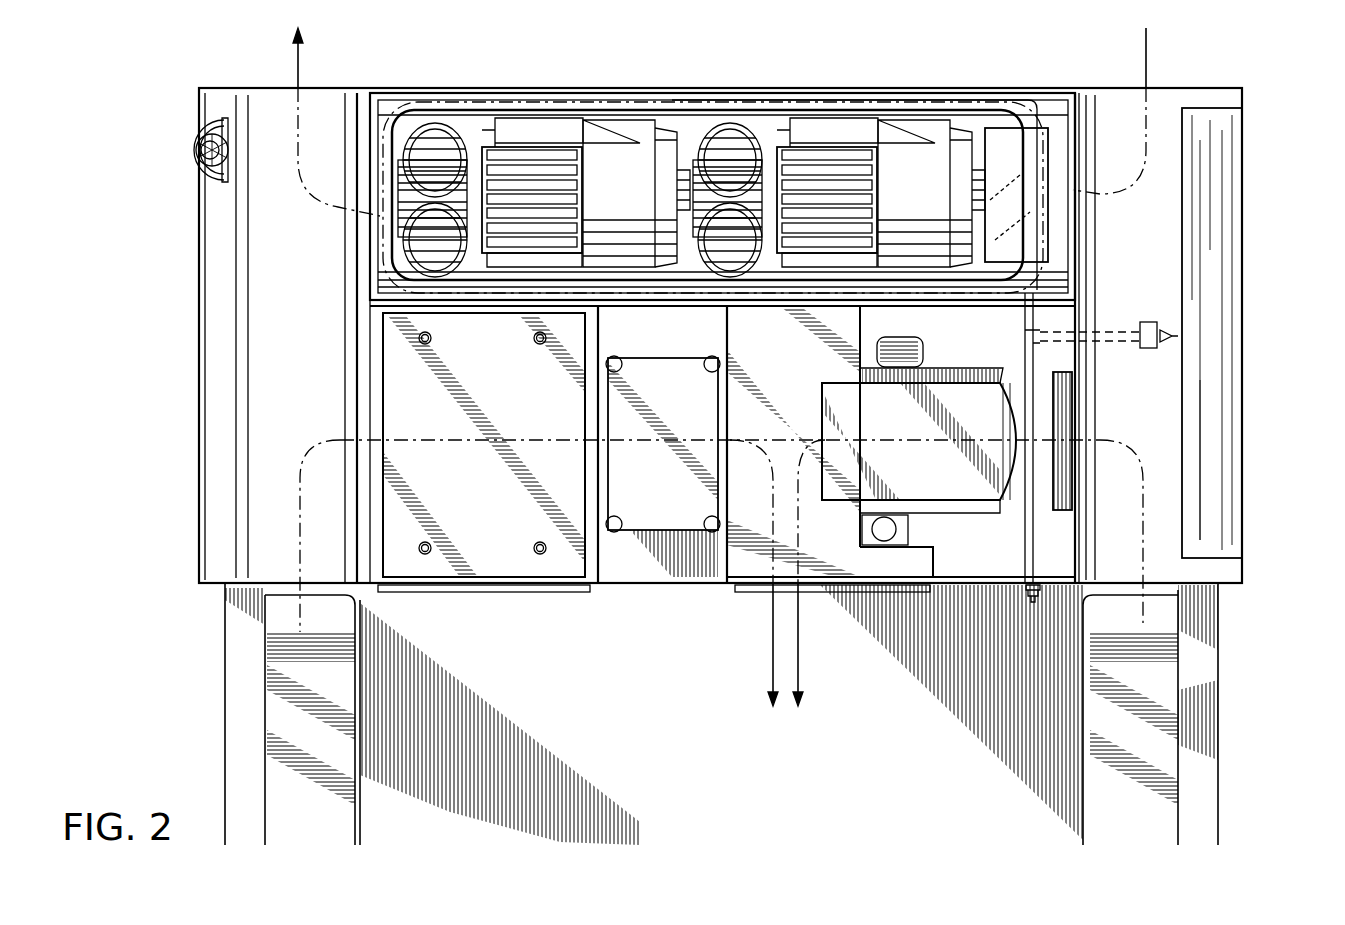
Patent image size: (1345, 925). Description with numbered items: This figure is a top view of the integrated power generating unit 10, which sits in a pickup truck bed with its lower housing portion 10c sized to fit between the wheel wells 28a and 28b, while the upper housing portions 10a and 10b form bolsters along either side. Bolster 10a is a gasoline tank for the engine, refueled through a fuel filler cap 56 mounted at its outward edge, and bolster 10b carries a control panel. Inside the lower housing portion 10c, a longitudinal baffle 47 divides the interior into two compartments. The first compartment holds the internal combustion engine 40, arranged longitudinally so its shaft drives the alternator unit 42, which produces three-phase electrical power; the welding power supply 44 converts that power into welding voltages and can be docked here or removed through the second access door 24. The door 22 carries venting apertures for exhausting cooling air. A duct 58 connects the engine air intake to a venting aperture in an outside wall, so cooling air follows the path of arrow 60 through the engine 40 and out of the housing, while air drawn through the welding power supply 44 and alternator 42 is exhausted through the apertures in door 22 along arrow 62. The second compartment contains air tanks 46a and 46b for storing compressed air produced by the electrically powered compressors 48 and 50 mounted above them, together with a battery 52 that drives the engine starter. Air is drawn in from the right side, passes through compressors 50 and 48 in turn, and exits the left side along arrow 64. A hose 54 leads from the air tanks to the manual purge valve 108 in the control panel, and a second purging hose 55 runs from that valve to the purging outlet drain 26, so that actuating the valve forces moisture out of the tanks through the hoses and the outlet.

The integrated unit 10 is at (1277, 265).
The upper housing portion 10a is at (310, 327).
The upper housing portion 10b is at (1144, 255).
The lower housing portion 10c is at (513, 90).
The door 22 is at (748, 593).
The second access door 24 is at (555, 593).
The purging outlet drain 26 is at (1033, 602).
The wheel well 28a is at (320, 755).
The wheel well 28b is at (1150, 755).
The internal combustion engine 40 is at (930, 424).
The alternator unit 42 is at (667, 414).
The welding power supply 44 is at (527, 404).
The air tank 46a is at (668, 125).
The air tank 46b is at (660, 306).
The longitudinal baffle 47 is at (762, 312).
The compressor 48 is at (627, 198).
The compressor 50 is at (927, 196).
The battery 52 is at (1019, 171).
The hose 54 is at (728, 100).
The second purging hose 55 is at (1024, 548).
The refueling cap 56 is at (184, 152).
The duct 58 is at (1055, 386).
The arrow 60 is at (1143, 456).
The arrow 62 is at (318, 445).
The arrow 64 is at (298, 67).
The manual purge valve 108 is at (1150, 320).